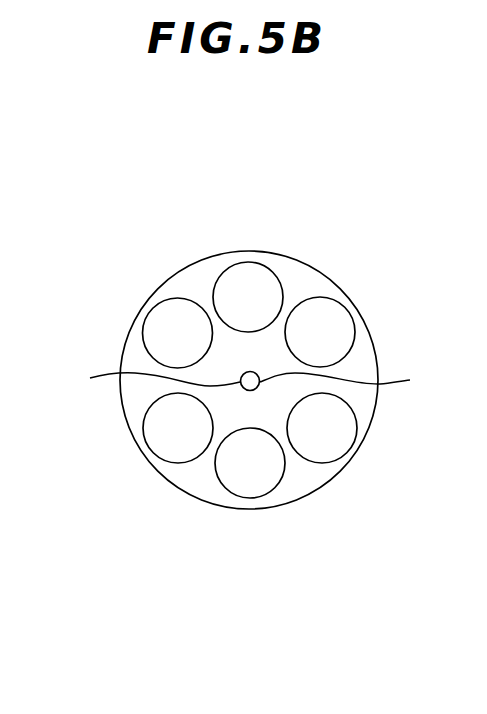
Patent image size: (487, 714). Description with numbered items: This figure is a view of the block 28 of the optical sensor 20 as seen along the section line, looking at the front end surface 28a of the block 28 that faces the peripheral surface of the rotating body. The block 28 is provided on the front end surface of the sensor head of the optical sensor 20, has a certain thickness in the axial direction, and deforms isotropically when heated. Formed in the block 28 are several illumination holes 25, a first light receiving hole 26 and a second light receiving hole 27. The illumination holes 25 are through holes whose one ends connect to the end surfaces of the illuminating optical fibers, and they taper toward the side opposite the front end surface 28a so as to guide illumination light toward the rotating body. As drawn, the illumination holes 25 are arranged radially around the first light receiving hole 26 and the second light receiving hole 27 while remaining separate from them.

The optical sensor 20 is at (268, 620).
The illumination holes 25 is at (250, 290).
The first light receiving hole 26 is at (150, 377).
The second light receiving hole 27 is at (356, 377).
The block 28 is at (265, 323).
The front end surface of the block 28a is at (193, 282).